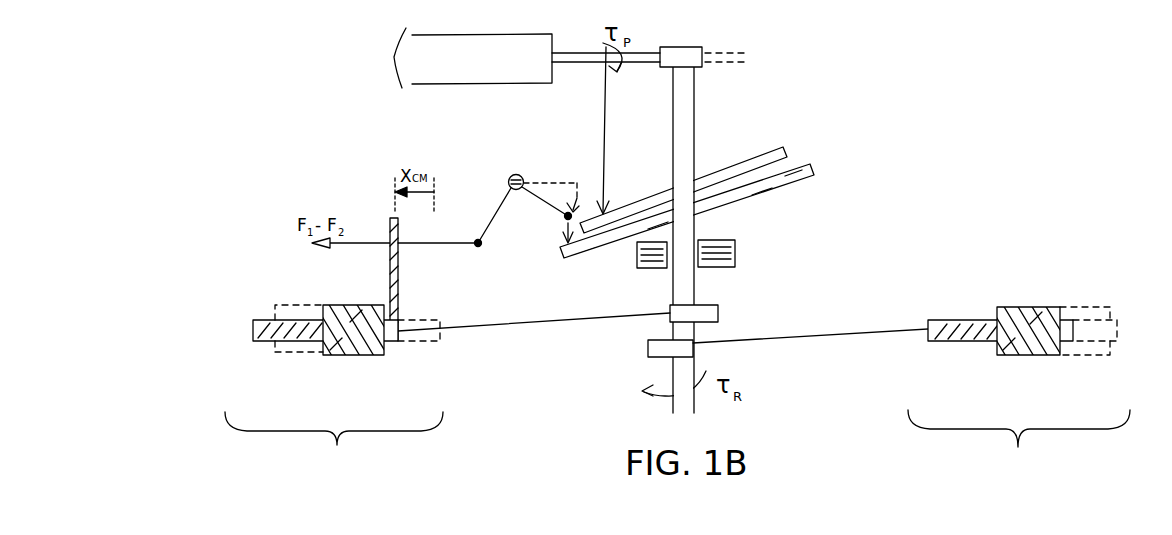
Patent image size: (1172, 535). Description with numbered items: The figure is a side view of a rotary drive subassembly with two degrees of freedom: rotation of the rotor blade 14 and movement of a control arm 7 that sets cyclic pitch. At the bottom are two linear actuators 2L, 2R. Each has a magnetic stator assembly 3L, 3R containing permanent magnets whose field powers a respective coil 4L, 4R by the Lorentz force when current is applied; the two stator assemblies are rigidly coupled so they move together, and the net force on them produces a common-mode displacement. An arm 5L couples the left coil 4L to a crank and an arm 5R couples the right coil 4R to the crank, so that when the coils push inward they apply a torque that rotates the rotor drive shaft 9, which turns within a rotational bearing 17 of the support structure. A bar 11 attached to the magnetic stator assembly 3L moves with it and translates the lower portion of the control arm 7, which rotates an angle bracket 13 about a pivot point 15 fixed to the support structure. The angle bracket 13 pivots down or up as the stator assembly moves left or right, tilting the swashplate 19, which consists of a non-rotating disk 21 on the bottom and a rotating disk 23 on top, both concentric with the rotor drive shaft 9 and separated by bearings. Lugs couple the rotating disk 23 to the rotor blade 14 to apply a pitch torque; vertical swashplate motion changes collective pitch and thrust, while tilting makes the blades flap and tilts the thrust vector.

The rotor blade 14 is at (484, 71).
The rotor drive shaft 9 is at (695, 118).
The rotating disk 23 is at (745, 158).
The non-rotating disk 21 is at (785, 184).
The swashplate 19 is at (856, 150).
The rotational bearing 17 is at (737, 253).
The control arm 7 is at (472, 146).
The pivot point 15 is at (515, 175).
The angle bracket 13 is at (493, 217).
The bar 11 is at (398, 272).
The left arm 5L is at (530, 322).
The right arm 5R is at (837, 337).
The left end magnetic stator assembly 3L is at (267, 342).
The right end magnetic stator assembly 3R is at (963, 320).
The left end coil 4L is at (358, 356).
The right end coil 4R is at (1033, 356).
The left linear actuator 2L is at (334, 443).
The right linear actuator 2R is at (1019, 442).